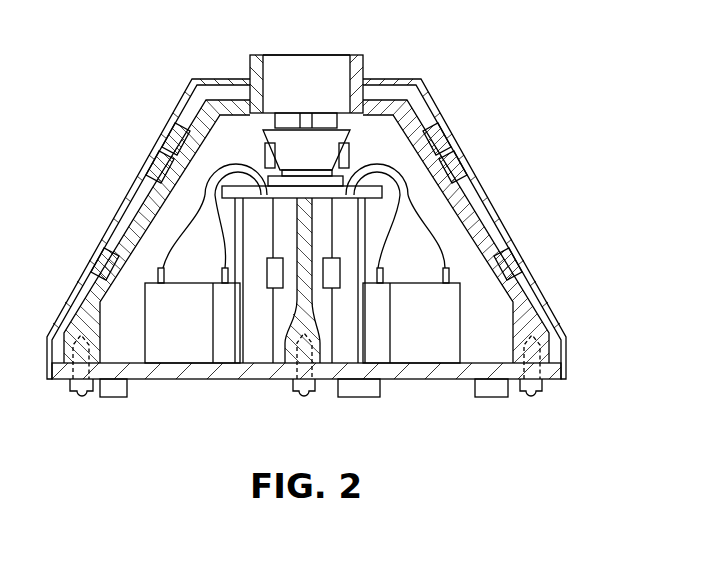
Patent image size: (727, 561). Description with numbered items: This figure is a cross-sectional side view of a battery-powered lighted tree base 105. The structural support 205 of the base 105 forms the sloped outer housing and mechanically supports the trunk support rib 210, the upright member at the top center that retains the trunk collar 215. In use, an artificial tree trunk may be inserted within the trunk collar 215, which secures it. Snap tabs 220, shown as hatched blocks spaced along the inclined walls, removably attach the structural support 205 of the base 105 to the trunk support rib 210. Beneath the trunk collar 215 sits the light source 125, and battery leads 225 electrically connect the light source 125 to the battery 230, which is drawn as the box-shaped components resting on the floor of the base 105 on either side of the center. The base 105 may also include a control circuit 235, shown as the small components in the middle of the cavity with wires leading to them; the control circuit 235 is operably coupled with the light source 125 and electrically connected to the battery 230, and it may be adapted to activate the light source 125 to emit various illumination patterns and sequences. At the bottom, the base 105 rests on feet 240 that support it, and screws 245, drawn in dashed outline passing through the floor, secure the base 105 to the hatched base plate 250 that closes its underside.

The base 105 is at (500, 41).
The light source 125 is at (273, 130).
The structural support 205 is at (480, 188).
The trunk support rib 210 is at (363, 60).
The trunk collar 215 is at (273, 55).
The snap tabs 220 is at (165, 140).
The battery leads 225 is at (185, 185).
The battery 230 is at (150, 295).
The control circuit 235 is at (214, 200).
The feet 240 is at (112, 397).
The screws 245 is at (75, 392).
The base plate 250 is at (205, 381).